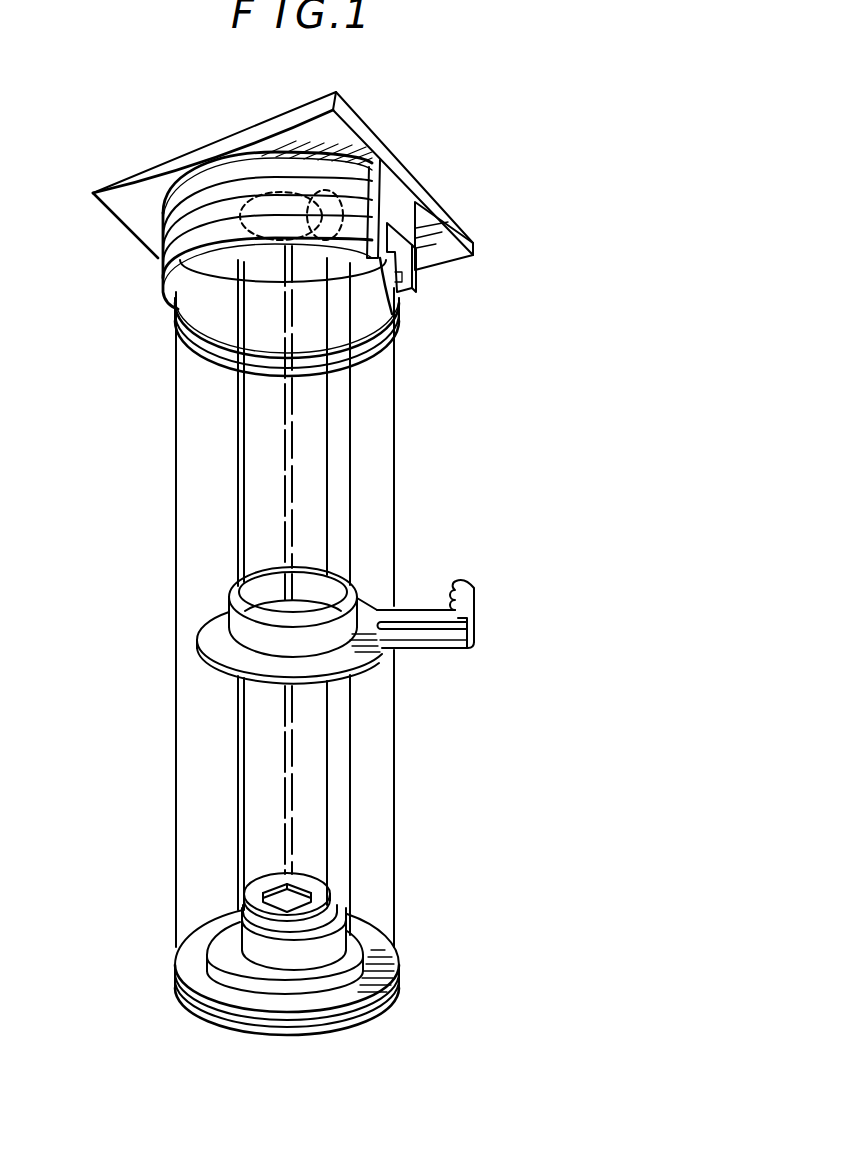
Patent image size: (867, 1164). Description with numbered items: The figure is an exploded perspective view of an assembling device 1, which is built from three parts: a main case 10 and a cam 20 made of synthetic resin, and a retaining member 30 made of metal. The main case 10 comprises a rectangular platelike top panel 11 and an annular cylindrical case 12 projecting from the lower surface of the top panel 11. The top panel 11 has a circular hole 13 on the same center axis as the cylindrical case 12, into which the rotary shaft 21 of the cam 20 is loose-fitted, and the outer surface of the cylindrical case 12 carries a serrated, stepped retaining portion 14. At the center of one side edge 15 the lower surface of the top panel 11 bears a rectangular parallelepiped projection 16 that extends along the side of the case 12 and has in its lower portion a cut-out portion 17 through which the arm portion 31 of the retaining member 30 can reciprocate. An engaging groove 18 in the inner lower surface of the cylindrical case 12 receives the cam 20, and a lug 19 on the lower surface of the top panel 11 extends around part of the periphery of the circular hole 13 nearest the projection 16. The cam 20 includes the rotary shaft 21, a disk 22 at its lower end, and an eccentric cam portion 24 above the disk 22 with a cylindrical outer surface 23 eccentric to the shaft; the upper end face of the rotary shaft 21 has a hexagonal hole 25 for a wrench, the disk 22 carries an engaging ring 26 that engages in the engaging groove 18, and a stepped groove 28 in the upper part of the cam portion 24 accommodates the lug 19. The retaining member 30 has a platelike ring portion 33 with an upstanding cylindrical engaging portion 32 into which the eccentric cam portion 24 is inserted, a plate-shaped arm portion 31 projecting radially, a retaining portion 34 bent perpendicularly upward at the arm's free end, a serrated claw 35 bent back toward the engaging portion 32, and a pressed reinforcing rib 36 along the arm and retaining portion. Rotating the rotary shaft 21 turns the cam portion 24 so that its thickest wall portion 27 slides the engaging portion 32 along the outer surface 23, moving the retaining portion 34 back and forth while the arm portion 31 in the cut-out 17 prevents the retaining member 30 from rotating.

The assembling device 1 is at (143, 497).
The main case 10 is at (460, 202).
The top panel 11 is at (162, 178).
The cylindrical case 12 is at (172, 318).
The circular hole 13 is at (248, 203).
The stepped retaining portion 14 is at (163, 268).
The side edge 15 is at (377, 150).
The projection 16 is at (405, 202).
The cut-out portion 17 is at (388, 265).
The engaging groove 18 is at (372, 344).
The lug 19 is at (330, 190).
The cam 20 is at (430, 945).
The rotary shaft 21 is at (317, 887).
The disk 22 is at (395, 994).
The cylindrical outer surface 23 is at (340, 933).
The eccentric cam portion 24 is at (275, 938).
The hexagonal hole 25 is at (260, 882).
The engaging ring 26 is at (397, 973).
The thickest wall portion 27 is at (345, 912).
The stepped groove 28 is at (320, 935).
The retaining member 30 is at (463, 553).
The arm portion 31 is at (437, 640).
The engaging portion 32 is at (357, 593).
The ring portion 33 is at (213, 640).
The retaining portion 34 is at (472, 631).
The serrated claw 35 is at (465, 583).
The reinforcing rib 36 is at (476, 606).